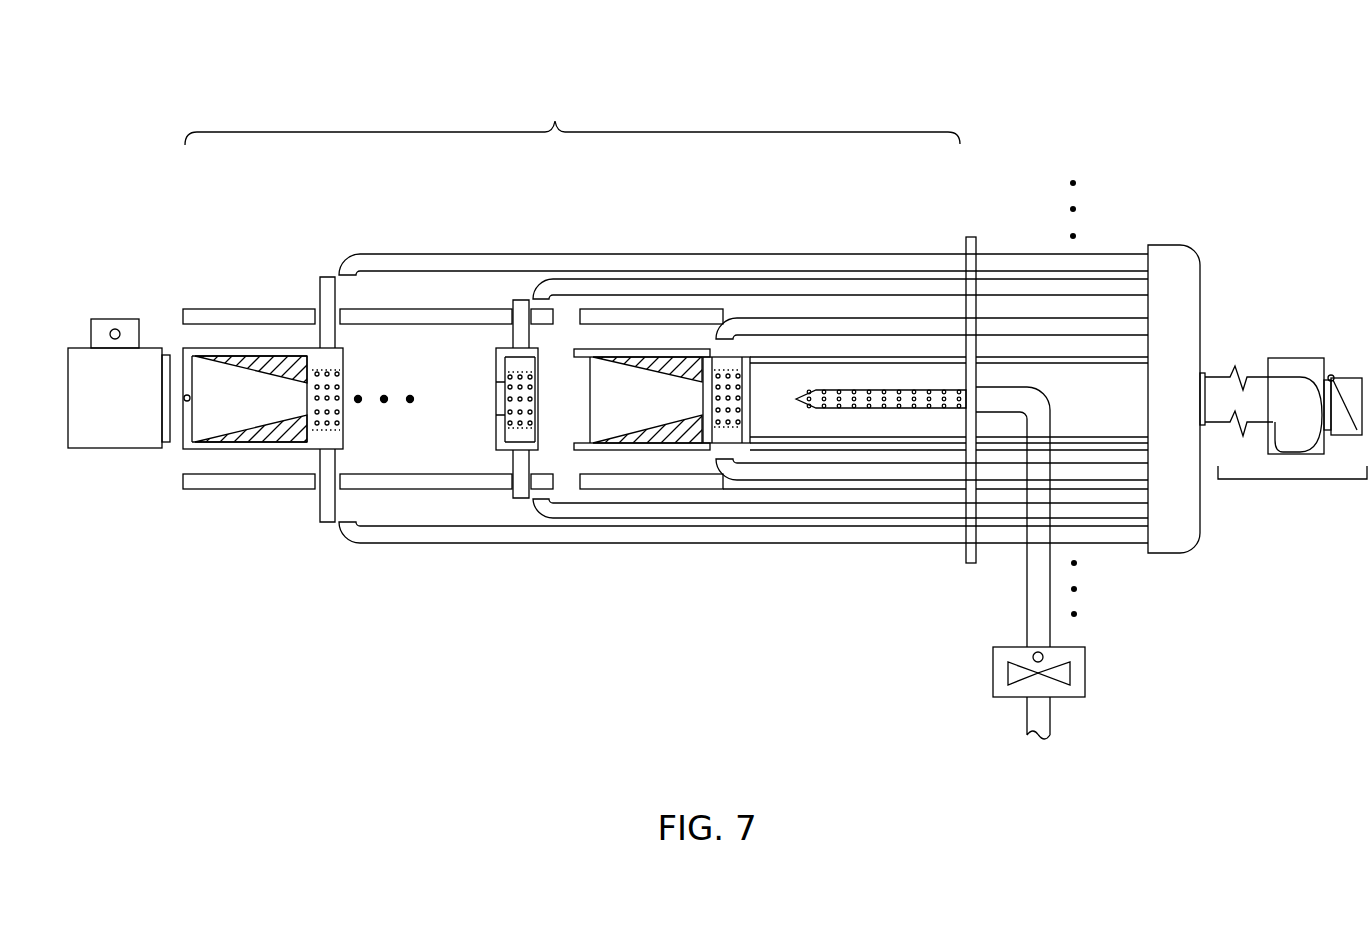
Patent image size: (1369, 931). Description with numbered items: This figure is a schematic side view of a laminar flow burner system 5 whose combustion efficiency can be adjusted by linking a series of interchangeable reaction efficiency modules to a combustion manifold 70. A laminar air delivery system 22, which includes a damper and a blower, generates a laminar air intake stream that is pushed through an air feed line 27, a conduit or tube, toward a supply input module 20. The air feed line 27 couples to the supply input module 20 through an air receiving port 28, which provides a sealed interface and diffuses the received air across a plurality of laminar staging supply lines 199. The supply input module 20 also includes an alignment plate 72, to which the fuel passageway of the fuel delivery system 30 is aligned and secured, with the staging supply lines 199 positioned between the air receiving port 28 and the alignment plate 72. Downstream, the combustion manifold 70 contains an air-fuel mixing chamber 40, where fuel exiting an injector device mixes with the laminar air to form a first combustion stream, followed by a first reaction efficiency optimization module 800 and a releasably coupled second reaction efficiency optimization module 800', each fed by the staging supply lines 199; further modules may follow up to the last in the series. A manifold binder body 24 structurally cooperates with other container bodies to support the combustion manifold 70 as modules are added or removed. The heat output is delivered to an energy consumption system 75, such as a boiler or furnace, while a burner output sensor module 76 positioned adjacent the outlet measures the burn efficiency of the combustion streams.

The laminar flow burner system 5 is at (1119, 99).
The supply input module 20 is at (1119, 210).
The laminar air delivery system 22 is at (1295, 480).
The manifold binder body 24 is at (223, 490).
The air feed line 27 is at (1218, 387).
The air receiving port 28 is at (1185, 270).
The fuel delivery system 30 is at (980, 593).
The air-fuel mixing chamber 40 is at (779, 427).
The combustion manifold 70 is at (572, 113).
The alignment plate 72 is at (972, 237).
The energy consumption system 75 is at (122, 410).
The burner output sensor module 76 is at (193, 395).
The laminar staging supply lines 199 is at (565, 262).
The first reaction efficiency optimization module 800 is at (770, 470).
The second reaction efficiency optimization module 800' is at (447, 321).